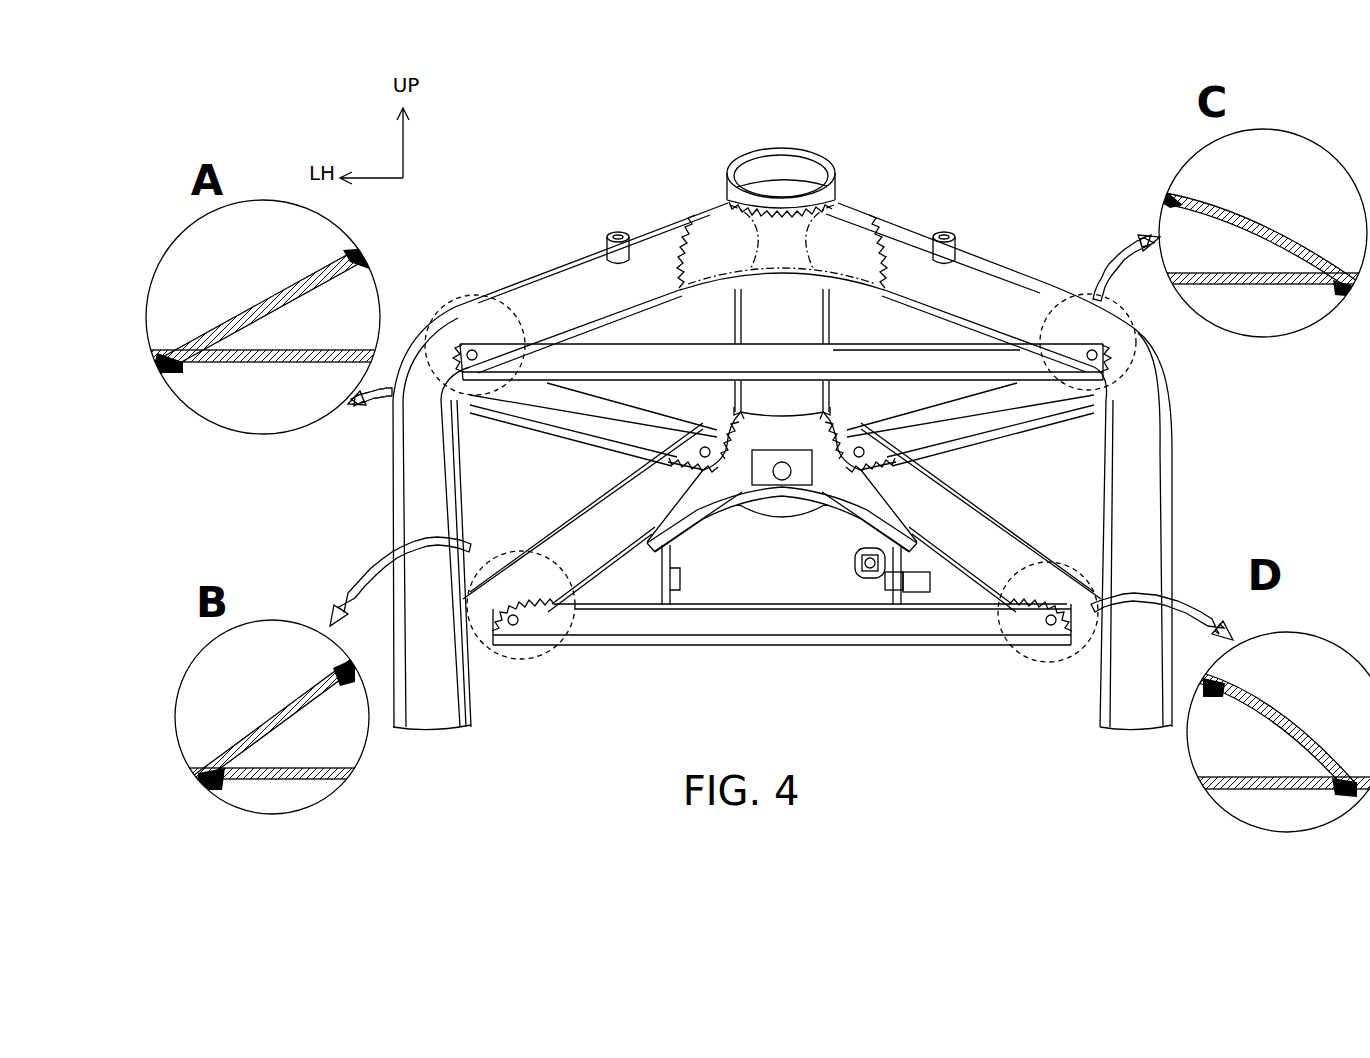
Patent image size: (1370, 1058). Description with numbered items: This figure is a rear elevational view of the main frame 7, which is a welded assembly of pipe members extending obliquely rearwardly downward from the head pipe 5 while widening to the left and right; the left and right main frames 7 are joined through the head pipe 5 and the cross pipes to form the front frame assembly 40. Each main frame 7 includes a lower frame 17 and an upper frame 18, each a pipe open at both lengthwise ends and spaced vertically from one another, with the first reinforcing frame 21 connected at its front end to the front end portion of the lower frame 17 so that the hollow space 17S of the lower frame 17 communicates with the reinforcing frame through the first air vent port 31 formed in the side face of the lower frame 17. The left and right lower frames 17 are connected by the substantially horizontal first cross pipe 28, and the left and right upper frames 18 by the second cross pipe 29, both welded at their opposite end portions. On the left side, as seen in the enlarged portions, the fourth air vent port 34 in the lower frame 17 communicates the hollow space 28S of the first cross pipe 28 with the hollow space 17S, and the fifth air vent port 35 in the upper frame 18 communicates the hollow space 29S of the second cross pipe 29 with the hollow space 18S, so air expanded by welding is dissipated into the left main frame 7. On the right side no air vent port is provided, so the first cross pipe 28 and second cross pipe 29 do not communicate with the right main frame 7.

The head pipe 5 is at (805, 150).
The main frame 7 is at (500, 268).
The lower frame 17 is at (550, 533).
The hollow space of the lower frame 17S is at (259, 650).
The upper frame 18 is at (550, 277).
The hollow space of the upper frame 18S is at (233, 251).
The first reinforcing frame 21 is at (537, 423).
The first cross pipe 28 is at (778, 652).
The hollow space of the first cross pipe 28S is at (325, 743).
The second cross pipe 29 is at (673, 360).
The hollow space of the second cross pipe 29S is at (297, 362).
The first air vent port 31 is at (720, 473).
The fourth air vent port 34 is at (523, 640).
The fifth air vent port 35 is at (468, 345).
The front frame assembly 40 is at (661, 153).